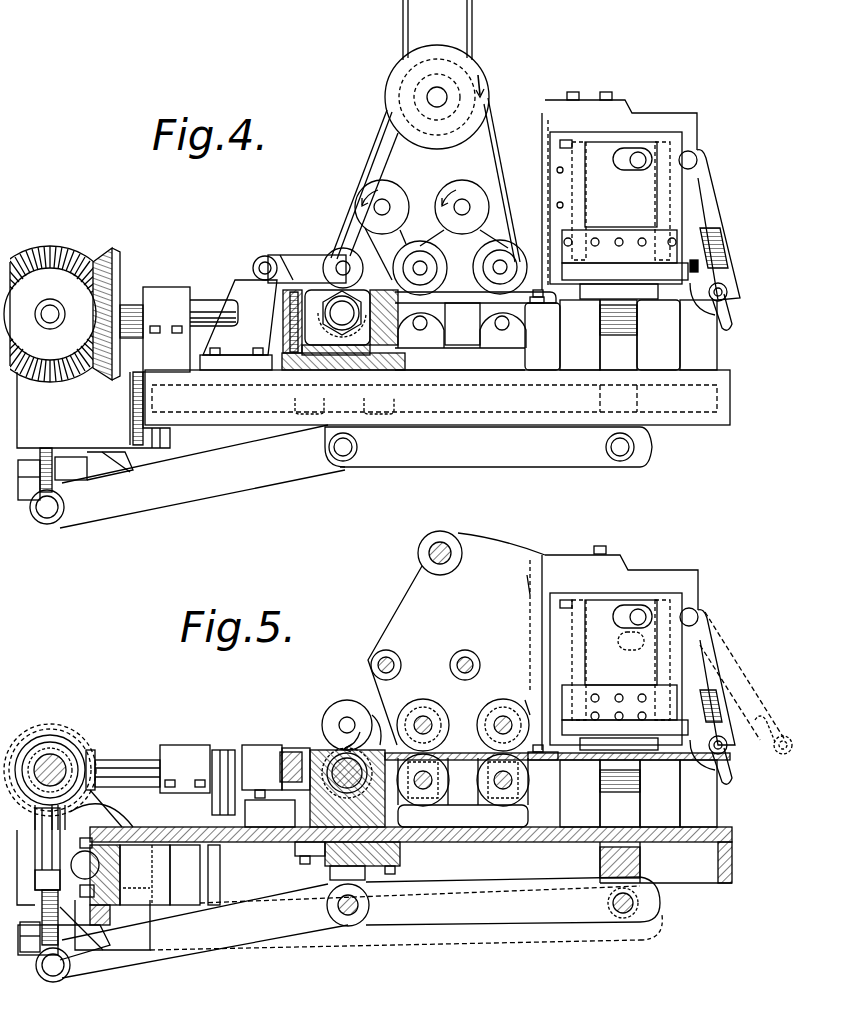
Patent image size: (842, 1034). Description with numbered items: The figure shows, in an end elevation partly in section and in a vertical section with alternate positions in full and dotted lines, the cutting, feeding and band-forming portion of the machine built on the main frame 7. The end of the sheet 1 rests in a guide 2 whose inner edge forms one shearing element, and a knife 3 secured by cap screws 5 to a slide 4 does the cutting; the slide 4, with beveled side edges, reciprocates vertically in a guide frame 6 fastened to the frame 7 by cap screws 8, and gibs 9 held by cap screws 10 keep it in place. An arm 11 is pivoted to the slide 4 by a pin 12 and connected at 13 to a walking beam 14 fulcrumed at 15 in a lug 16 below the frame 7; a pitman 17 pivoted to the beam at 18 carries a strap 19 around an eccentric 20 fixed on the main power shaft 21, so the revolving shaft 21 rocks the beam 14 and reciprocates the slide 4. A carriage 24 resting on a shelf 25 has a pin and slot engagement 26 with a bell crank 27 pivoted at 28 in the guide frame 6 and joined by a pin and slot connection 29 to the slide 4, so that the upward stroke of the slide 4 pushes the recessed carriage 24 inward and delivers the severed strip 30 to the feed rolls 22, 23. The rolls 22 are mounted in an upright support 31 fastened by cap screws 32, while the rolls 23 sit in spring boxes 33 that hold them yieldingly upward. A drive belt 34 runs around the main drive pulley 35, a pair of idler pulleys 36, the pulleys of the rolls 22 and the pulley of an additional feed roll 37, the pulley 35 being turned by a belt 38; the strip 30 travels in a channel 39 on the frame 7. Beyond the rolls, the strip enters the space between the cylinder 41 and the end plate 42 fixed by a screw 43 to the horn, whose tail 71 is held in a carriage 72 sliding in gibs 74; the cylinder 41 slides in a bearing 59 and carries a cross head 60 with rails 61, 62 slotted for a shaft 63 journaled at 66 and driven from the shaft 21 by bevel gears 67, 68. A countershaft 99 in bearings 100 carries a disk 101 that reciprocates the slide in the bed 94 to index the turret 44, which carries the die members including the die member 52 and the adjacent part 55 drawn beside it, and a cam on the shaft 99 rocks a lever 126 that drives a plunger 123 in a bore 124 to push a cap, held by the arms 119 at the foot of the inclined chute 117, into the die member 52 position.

In FIG. 4, the sheet 1 is at (575, 300).
In FIG. 4, the guide 2 is at (665, 300).
In FIG. 4, the knife 3 is at (625, 264).
In FIG. 5, the knife 3 is at (625, 717).
In FIG. 4, the slide 4 is at (600, 204).
In FIG. 5, the slide 4 is at (621, 642).
In FIG. 4, the cap screws 5 is at (640, 238).
In FIG. 5, the cap screws 5 is at (642, 694).
In FIG. 4, the guide frame 6 is at (702, 118).
In FIG. 5, the guide frame 6 is at (702, 583).
In FIG. 4, the main frame 7 is at (755, 397).
In FIG. 5, the main frame 7 is at (734, 866).
In FIG. 4, the cap screws 8 is at (540, 285).
In FIG. 5, the cap screws 8 is at (538, 743).
In FIG. 4, the gibs 9 is at (578, 175).
In FIG. 5, the gibs 9 is at (575, 637).
In FIG. 4, the cap screws 10 is at (556, 170).
In FIG. 4, the arm 11 is at (618, 335).
In FIG. 5, the arm 11 is at (620, 821).
In FIG. 4, the pin 12 is at (638, 325).
In FIG. 4, the pivot connection 13 is at (620, 447).
In FIG. 5, the pivot connection 13 is at (635, 905).
In FIG. 4, the walking beam 14 is at (488, 447).
In FIG. 5, the walking beam 14 is at (518, 905).
In FIG. 4, the fulcrum 15 is at (343, 447).
In FIG. 5, the fulcrum 15 is at (349, 915).
In FIG. 4, the lug 16 is at (350, 466).
In FIG. 5, the lug 16 is at (400, 858).
In FIG. 4, the pitman 17 is at (46, 446).
In FIG. 5, the pitman 17 is at (47, 876).
In FIG. 4, the pivot 18 is at (48, 514).
In FIG. 5, the pivot 18 is at (52, 976).
In FIG. 5, the strap 19 is at (40, 742).
In FIG. 5, the eccentric 20 is at (70, 760).
In FIG. 4, the main power shaft 21 is at (50, 314).
In FIG. 5, the main power shaft 21 is at (55, 762).
In FIG. 4, the feed rolls 22 is at (420, 258).
In FIG. 5, the feed rolls 22 is at (422, 705).
In FIG. 4, the feed rolls 23 is at (462, 332).
In FIG. 5, the feed rolls 23 is at (440, 786).
In FIG. 4, the carriage 24 is at (720, 320).
In FIG. 5, the carriage 24 is at (720, 790).
In FIG. 4, the shelf 25 is at (542, 336).
In FIG. 5, the shelf 25 is at (665, 762).
In FIG. 4, the pin and slot engagement 26 is at (730, 292).
In FIG. 5, the pin and slot engagement 26 is at (728, 755).
In FIG. 4, the bell crank 27 is at (706, 205).
In FIG. 5, the bell crank 27 is at (706, 650).
In FIG. 4, the pivot 28 is at (698, 158).
In FIG. 5, the pivot 28 is at (700, 617).
In FIG. 4, the pin and slot connection 29 is at (640, 152).
In FIG. 5, the pin and slot connection 29 is at (640, 610).
In FIG. 5, the severed strip 30 is at (582, 762).
In FIG. 4, the upright support 31 is at (492, 180).
In FIG. 5, the upright support 31 is at (456, 638).
In FIG. 4, the cap screws 32 is at (604, 90).
In FIG. 5, the cap screws 32 is at (596, 548).
In FIG. 5, the spring boxes 33 is at (500, 808).
In FIG. 4, the drive belt 34 is at (375, 128).
In FIG. 4, the main drive pulley 35 is at (388, 82).
In FIG. 4, the idler pulleys 36 is at (450, 198).
In FIG. 4, the additional feed roll 37 is at (345, 248).
In FIG. 5, the additional feed roll 37 is at (347, 710).
In FIG. 4, the belt 38 is at (476, 28).
In FIG. 4, the channel 39 is at (475, 285).
In FIG. 5, the channel 39 is at (460, 750).
In FIG. 5, the cylinder 41 is at (320, 770).
In FIG. 5, the end plate 42 is at (340, 765).
In FIG. 5, the screw 43 is at (345, 752).
In FIG. 5, the turret 44 is at (374, 715).
In FIG. 5, the die member 52 is at (268, 786).
In FIG. 5, the collar 55 is at (290, 748).
In FIG. 5, the bearing 59 is at (298, 862).
In FIG. 4, the cross head 60 is at (408, 362).
In FIG. 4, the rail 61 is at (277, 318).
In FIG. 4, the rail 62 is at (430, 312).
In FIG. 4, the shaft 63 is at (210, 298).
In FIG. 4, the journal 66 is at (155, 329).
In FIG. 4, the bevel gear 67 is at (108, 255).
In FIG. 4, the bevel gear 68 is at (50, 250).
In FIG. 4, the tail 71 is at (340, 322).
In FIG. 4, the carriage 72 is at (343, 372).
In FIG. 4, the gibs 74 is at (412, 394).
In FIG. 4, the bed 94 is at (75, 476).
In FIG. 5, the bed 94 is at (80, 930).
In FIG. 5, the countershaft 99 is at (110, 866).
In FIG. 5, the bearings 100 is at (140, 898).
In FIG. 5, the disk 101 is at (110, 925).
In FIG. 5, the inclined chute 117 is at (223, 752).
In FIG. 5, the arms 119 is at (220, 845).
In FIG. 5, the plunger 123 is at (145, 765).
In FIG. 5, the bore 124 is at (185, 769).
In FIG. 5, the lever 126 is at (105, 806).